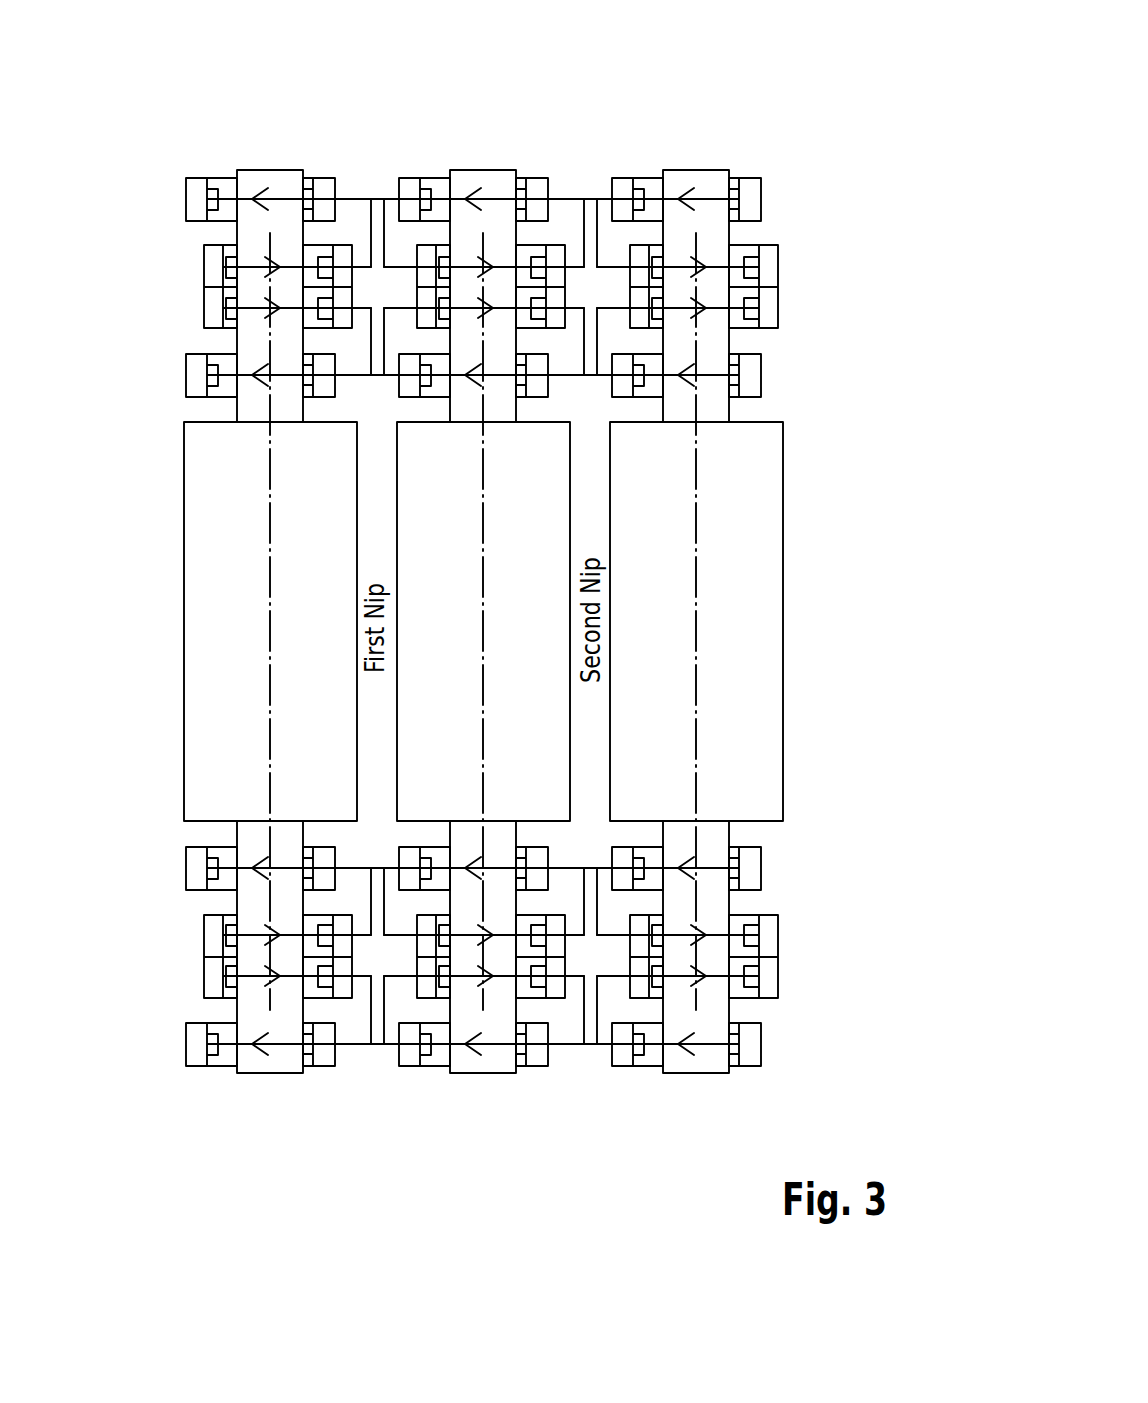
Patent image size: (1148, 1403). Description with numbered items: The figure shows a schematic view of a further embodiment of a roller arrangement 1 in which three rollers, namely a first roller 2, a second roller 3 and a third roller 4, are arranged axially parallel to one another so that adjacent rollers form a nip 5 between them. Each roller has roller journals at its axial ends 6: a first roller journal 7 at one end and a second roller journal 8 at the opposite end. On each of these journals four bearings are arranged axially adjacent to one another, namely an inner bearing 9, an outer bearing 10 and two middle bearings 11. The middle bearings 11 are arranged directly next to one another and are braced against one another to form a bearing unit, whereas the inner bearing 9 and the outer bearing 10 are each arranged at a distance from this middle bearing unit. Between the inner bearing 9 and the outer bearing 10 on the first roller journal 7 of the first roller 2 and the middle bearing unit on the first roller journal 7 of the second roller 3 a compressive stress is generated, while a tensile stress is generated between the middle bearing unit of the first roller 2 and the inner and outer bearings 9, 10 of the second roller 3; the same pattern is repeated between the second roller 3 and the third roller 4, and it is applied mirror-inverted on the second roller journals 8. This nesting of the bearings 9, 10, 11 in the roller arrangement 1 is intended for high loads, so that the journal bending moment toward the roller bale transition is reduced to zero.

The roller arrangement 1 is at (795, 62).
The first roller 2 is at (210, 525).
The second roller 3 is at (430, 523).
The third roller 4 is at (643, 523).
The nip 5 is at (377, 457).
The axial ends 6 is at (325, 153).
The first roller journal 7 is at (248, 170).
The second roller journal 8 is at (248, 1073).
The inner bearing 9 is at (200, 375).
The outer bearing 10 is at (410, 178).
The middle bearings 11 is at (218, 293).